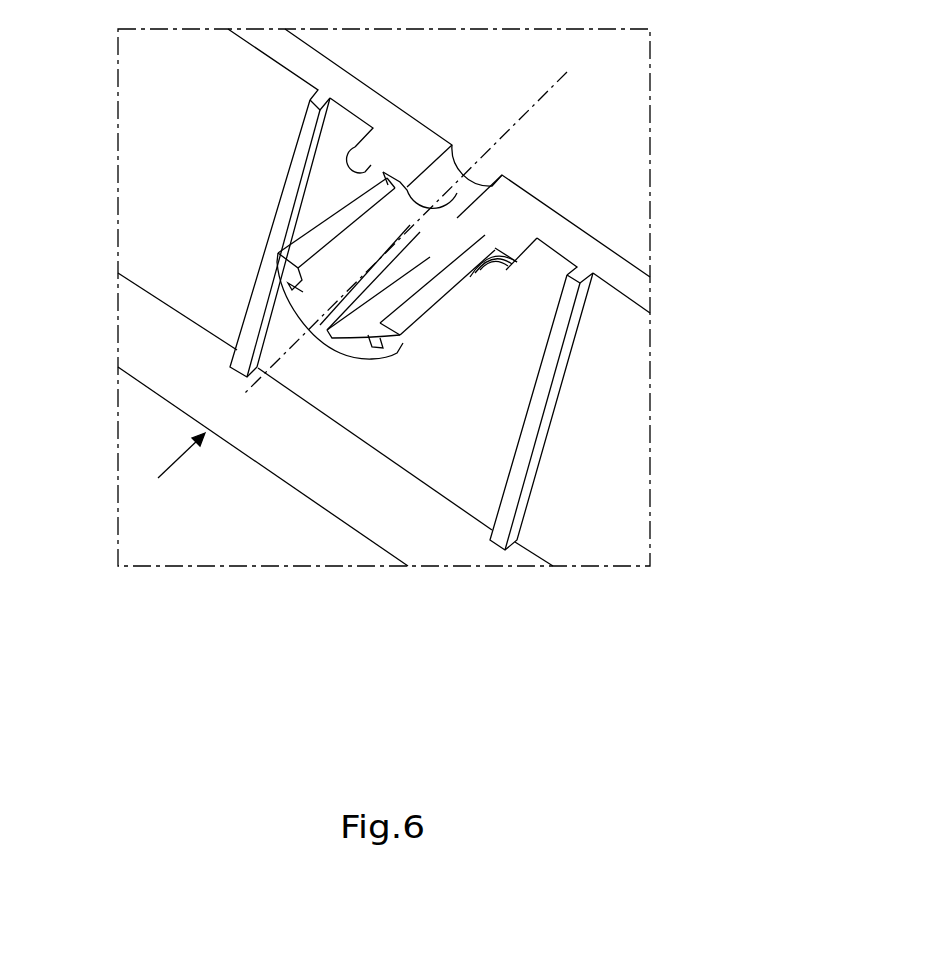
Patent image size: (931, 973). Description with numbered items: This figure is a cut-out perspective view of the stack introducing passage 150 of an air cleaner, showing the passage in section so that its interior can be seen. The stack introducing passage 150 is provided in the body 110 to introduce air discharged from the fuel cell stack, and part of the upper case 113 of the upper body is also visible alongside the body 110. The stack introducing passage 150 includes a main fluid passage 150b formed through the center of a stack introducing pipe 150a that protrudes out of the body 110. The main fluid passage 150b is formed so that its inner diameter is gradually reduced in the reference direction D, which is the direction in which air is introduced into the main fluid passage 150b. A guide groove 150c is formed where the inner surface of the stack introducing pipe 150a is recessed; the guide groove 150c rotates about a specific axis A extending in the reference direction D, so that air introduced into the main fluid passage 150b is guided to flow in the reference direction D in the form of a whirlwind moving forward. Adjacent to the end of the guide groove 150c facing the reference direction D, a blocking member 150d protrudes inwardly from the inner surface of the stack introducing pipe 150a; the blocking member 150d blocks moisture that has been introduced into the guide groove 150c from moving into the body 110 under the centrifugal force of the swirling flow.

The body 110 is at (722, 358).
The upper case 113 is at (503, 377).
The stack introducing passage 150 is at (328, 288).
The stack introducing pipe 150a is at (433, 293).
The main fluid passage 150b is at (353, 257).
The guide groove 150c is at (412, 178).
The blocking member 150d is at (463, 220).
The specific axis A is at (416, 223).
The reference direction D is at (174, 467).